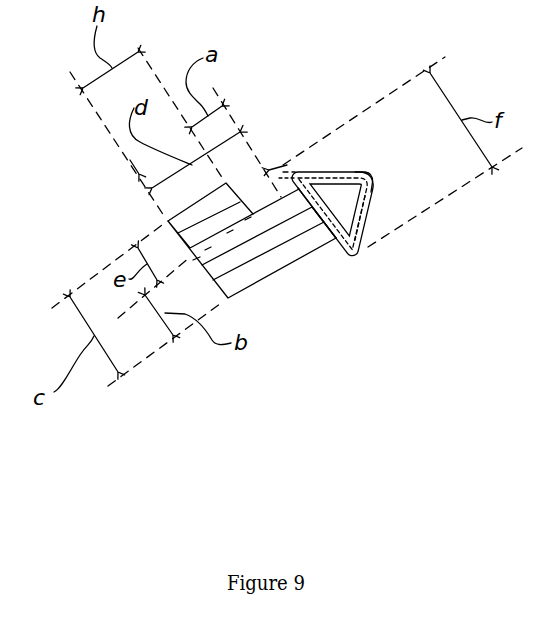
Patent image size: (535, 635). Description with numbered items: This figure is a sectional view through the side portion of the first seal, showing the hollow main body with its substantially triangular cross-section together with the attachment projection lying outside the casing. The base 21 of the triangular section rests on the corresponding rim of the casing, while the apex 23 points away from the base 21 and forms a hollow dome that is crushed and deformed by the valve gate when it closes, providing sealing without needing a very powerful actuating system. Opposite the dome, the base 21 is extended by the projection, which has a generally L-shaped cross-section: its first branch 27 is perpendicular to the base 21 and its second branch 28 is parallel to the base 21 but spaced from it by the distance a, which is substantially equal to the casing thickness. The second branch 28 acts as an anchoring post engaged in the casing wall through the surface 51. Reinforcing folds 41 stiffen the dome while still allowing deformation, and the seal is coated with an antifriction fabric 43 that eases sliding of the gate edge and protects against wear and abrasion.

The base 21 is at (320, 215).
The apex 23 is at (376, 177).
The first branch 27 is at (270, 274).
The second branch 28 is at (177, 239).
The folds 41 is at (314, 178).
The antifriction fabric 43 is at (367, 222).
The surface 51 is at (253, 213).